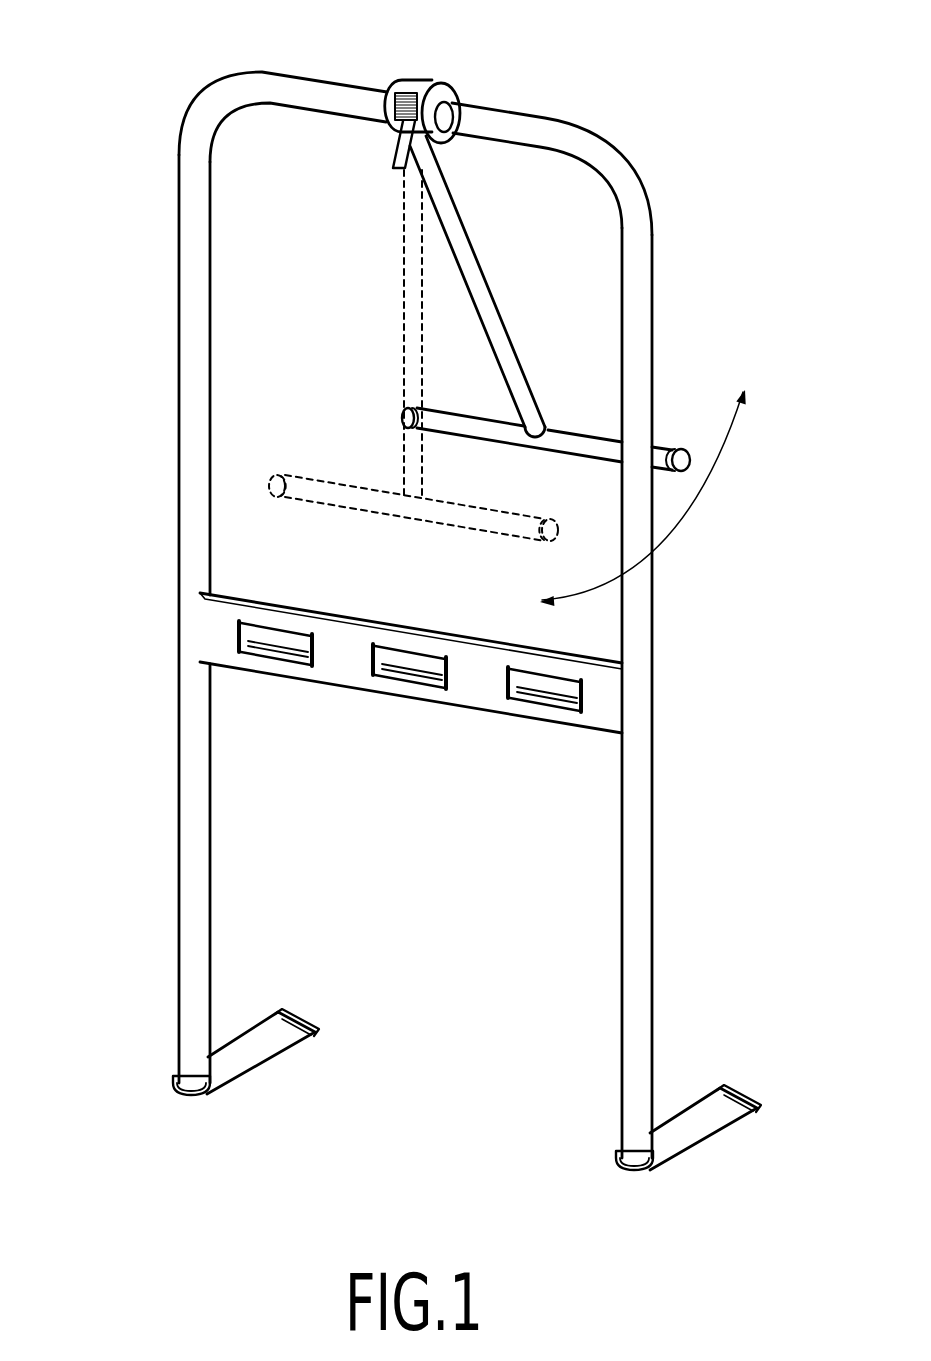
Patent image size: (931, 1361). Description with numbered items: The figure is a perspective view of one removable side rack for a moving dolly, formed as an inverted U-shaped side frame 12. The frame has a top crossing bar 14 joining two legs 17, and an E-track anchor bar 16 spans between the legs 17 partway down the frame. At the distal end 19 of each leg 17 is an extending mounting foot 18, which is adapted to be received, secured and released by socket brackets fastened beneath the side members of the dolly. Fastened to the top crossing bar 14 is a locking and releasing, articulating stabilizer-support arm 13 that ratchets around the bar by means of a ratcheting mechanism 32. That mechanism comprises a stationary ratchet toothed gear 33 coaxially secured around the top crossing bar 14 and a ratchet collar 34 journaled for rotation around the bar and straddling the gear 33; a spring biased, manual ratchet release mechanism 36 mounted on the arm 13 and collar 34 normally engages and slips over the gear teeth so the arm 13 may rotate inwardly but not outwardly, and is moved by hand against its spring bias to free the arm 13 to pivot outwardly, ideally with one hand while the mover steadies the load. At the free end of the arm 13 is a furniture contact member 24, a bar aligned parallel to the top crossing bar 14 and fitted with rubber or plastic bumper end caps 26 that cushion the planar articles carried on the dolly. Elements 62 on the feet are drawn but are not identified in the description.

The inverted U-shaped side frame 12 is at (424, 606).
The articulating stabilizer-support arm 13 is at (474, 241).
The top crossing bar 14 is at (528, 114).
The E-track anchor bar 16 is at (404, 697).
The leg 17 is at (176, 828).
The extending mounting foot 18 is at (267, 1073).
The distal end 19 is at (174, 1089).
The furniture contact member 24 is at (579, 431).
The bumper end cap 26 is at (686, 450).
The ratcheting mechanism 32 is at (437, 78).
The ratchet toothed gear 33 is at (406, 93).
The ratchet collar 34 is at (389, 79).
The manual ratchet release mechanism 36 is at (396, 151).
The foot pads 62 is at (285, 1012).